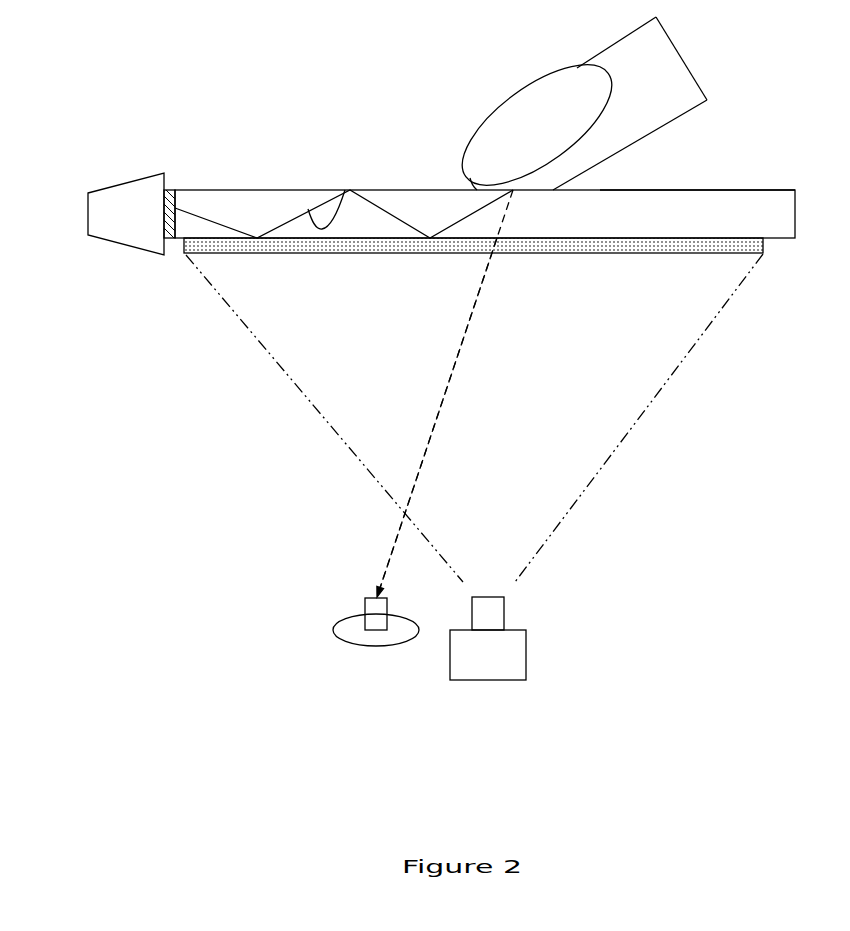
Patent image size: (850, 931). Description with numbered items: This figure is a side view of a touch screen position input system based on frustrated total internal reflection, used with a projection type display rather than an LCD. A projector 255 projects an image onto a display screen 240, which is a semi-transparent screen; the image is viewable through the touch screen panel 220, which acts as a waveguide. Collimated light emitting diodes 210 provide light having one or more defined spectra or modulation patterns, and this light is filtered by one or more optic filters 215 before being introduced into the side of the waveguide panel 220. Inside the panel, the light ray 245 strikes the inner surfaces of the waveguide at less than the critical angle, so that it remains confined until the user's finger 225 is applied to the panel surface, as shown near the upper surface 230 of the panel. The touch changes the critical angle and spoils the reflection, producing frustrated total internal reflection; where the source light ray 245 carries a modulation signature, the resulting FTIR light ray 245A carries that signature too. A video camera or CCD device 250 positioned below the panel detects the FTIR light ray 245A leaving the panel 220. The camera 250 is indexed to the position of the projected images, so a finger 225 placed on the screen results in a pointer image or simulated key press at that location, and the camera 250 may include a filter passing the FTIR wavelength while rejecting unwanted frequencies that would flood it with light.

The collimated light emitting diodes 210 is at (122, 173).
The optic filters 215 is at (175, 190).
The waveguide or panel 220 is at (273, 190).
The finger 225 is at (483, 93).
The touch surface 230 is at (706, 190).
The display screen 240 is at (173, 255).
The light ray 245 is at (333, 222).
The FTIR light ray 245A is at (453, 372).
The video camera or CCD device 250 is at (323, 616).
The projector 255 is at (537, 663).